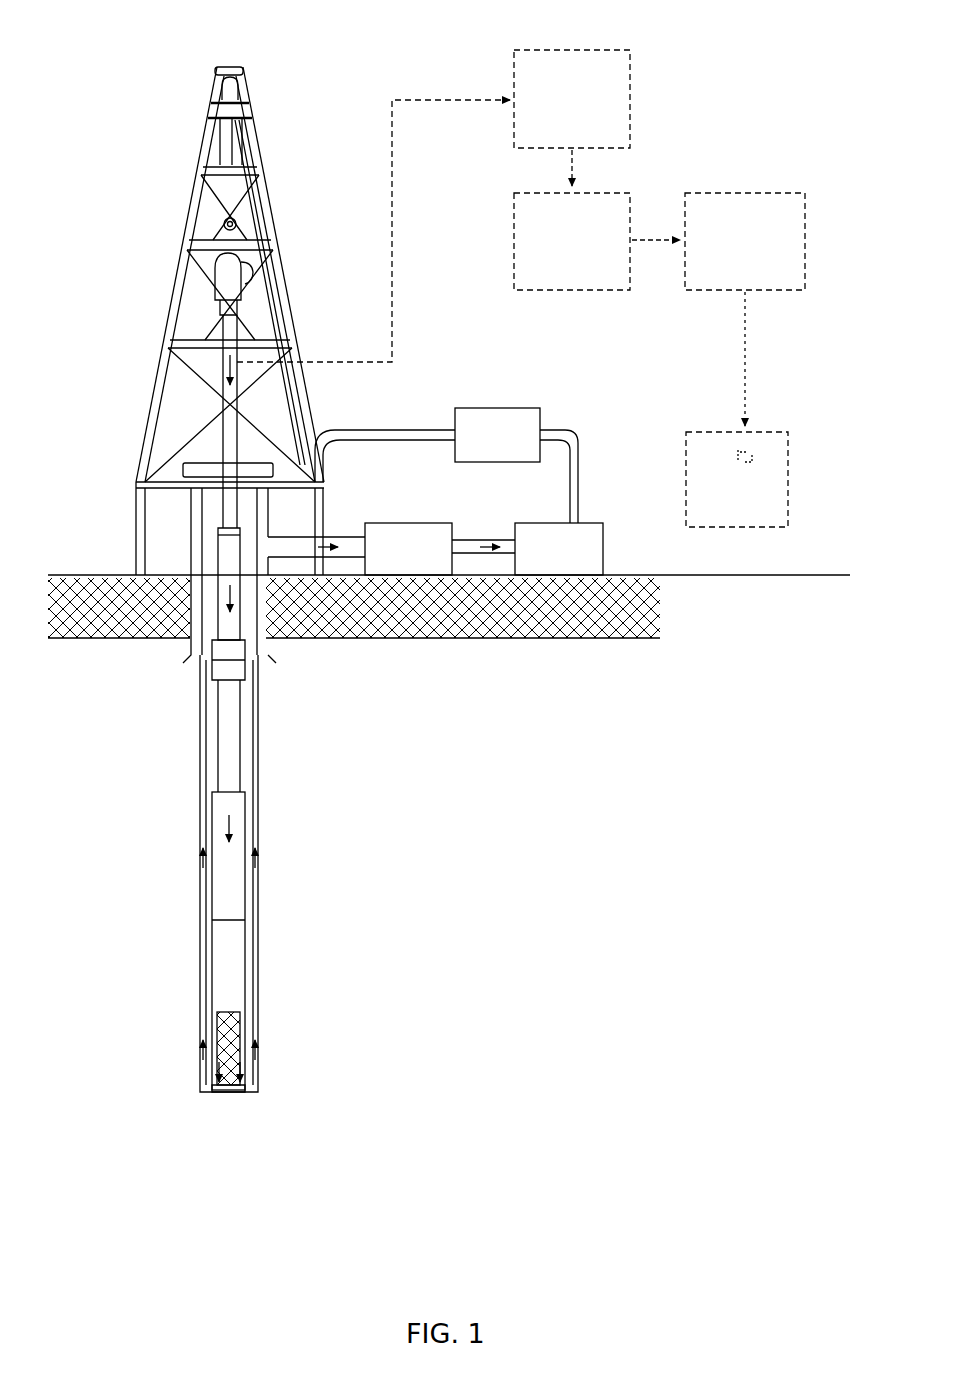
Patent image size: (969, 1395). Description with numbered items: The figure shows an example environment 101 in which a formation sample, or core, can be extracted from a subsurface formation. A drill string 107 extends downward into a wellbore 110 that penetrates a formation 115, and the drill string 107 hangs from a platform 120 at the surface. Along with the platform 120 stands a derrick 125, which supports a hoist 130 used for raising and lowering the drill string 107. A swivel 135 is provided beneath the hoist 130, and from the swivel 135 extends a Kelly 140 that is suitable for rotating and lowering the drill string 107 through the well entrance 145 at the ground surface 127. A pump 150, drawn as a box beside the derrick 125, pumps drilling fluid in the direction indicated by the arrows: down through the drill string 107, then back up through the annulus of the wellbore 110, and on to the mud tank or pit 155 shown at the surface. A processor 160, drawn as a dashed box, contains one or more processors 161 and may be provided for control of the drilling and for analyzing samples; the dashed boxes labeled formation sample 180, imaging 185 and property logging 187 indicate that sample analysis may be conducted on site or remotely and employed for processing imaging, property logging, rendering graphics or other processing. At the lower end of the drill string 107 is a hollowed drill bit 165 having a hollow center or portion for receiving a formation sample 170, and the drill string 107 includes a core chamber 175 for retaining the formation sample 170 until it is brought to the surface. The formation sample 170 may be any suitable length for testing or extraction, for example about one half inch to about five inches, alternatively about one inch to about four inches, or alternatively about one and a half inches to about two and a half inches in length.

The example environment 101 is at (118, 48).
The drill string 107 is at (226, 729).
The wellbore 110 is at (208, 767).
The formation 115 is at (458, 871).
The platform 120 is at (182, 470).
The derrick 125 is at (268, 190).
The surface 127 is at (93, 573).
The hoist 130 is at (224, 222).
The swivel 135 is at (246, 270).
The Kelly 140 is at (240, 446).
The well entrance 145 is at (203, 572).
The pump 150 is at (502, 420).
The mud tank or pit 155 is at (554, 553).
The processor 160 is at (758, 431).
The processors 161 is at (738, 467).
The hollowed drill bit 165 is at (250, 1070).
The formation sample 170 is at (218, 1037).
The core chamber 175 is at (229, 938).
The formation sample 180 is at (616, 52).
The imaging 185 is at (616, 193).
The property logging 187 is at (790, 193).